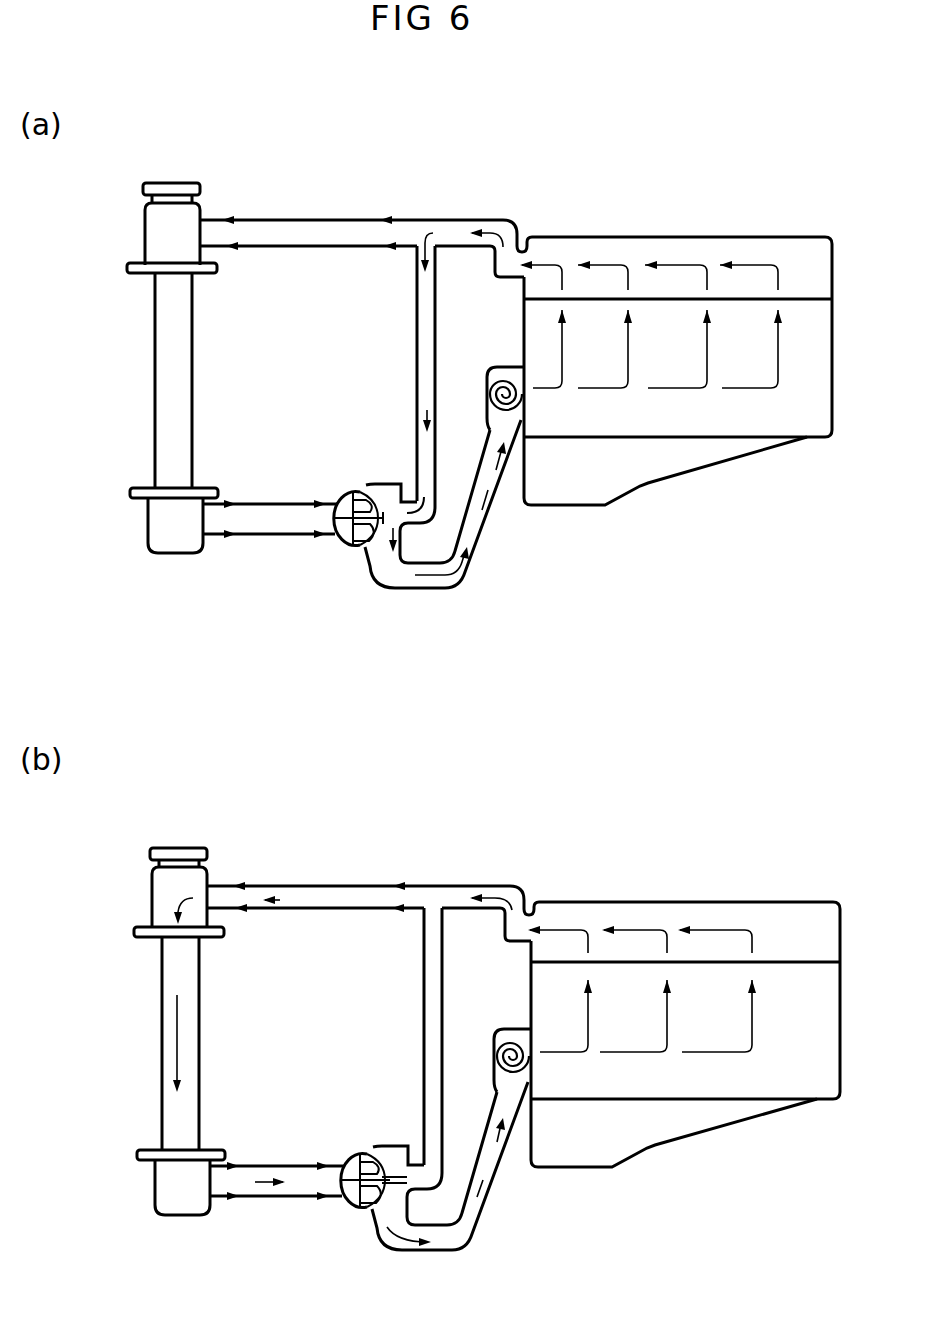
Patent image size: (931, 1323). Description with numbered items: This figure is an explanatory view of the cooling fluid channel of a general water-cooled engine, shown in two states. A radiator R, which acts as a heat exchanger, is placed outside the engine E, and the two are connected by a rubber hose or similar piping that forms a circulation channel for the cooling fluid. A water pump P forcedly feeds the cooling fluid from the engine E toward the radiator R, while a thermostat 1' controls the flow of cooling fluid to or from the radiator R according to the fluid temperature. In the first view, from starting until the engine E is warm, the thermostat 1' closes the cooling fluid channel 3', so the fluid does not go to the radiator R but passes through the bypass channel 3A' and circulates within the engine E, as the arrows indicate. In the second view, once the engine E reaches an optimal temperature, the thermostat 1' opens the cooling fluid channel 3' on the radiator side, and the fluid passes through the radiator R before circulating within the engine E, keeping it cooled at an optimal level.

The radiator R is at (147, 233).
The cooling fluid channel 3' is at (369, 703).
The bypass channel 3A' is at (418, 735).
The engine E is at (665, 238).
The water pump P is at (496, 378).
The thermostat 1' is at (427, 851).